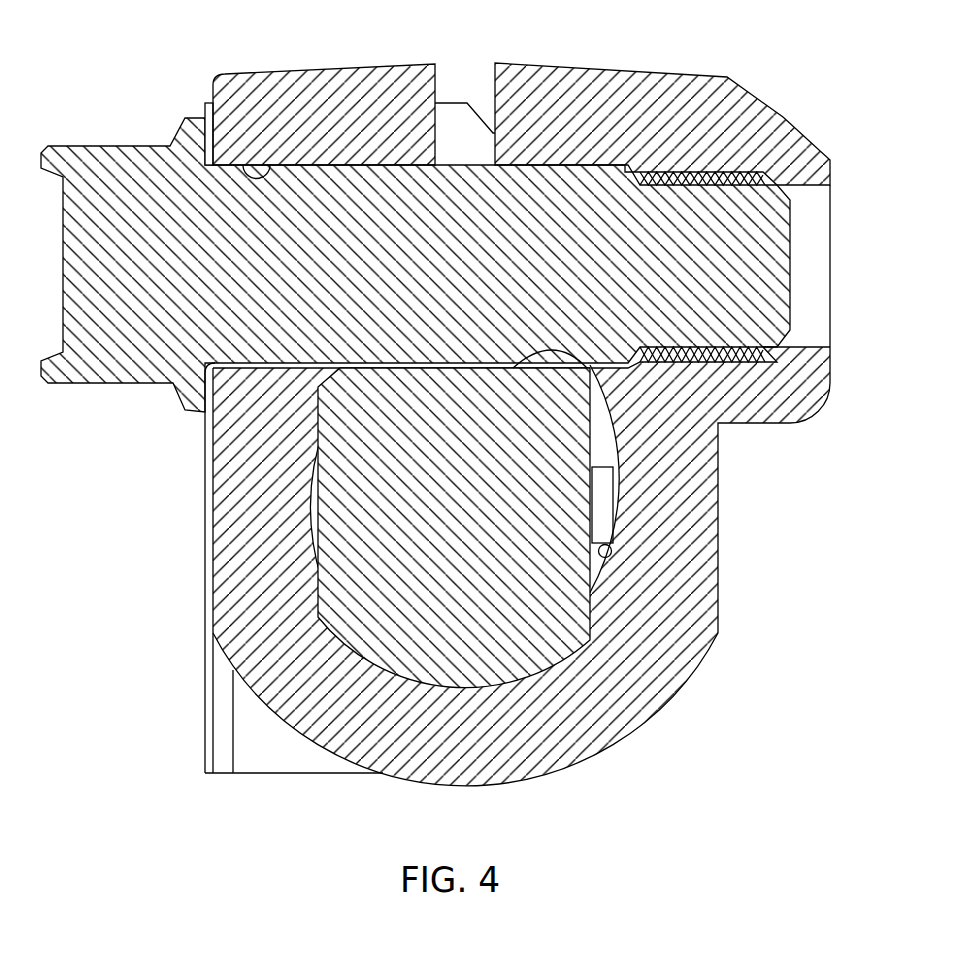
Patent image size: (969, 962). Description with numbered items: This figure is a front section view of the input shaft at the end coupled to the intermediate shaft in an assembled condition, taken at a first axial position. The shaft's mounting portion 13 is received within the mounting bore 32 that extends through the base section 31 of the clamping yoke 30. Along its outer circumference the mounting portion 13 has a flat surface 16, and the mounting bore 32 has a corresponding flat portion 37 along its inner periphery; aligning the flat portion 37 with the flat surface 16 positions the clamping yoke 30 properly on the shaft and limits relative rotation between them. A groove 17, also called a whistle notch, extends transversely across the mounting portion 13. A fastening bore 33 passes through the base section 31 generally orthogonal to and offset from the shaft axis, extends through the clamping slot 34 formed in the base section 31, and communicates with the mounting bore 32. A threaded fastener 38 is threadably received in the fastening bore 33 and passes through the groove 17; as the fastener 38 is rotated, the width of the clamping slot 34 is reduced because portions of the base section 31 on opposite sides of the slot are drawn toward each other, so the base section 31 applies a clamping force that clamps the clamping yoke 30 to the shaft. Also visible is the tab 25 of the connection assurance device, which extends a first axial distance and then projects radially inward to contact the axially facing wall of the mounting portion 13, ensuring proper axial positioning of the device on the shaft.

The mounting portion 13 is at (582, 592).
The flat surface 16 is at (325, 425).
The groove 17 is at (590, 366).
The tab 25 is at (603, 499).
The clamping yoke 30 is at (686, 60).
The base section 31 is at (334, 82).
The mounting bore 32 is at (605, 546).
The fastening bore 33 is at (250, 173).
The clamping slot 34 is at (466, 75).
The flat portion 37 is at (319, 577).
The fastener 38 is at (770, 284).